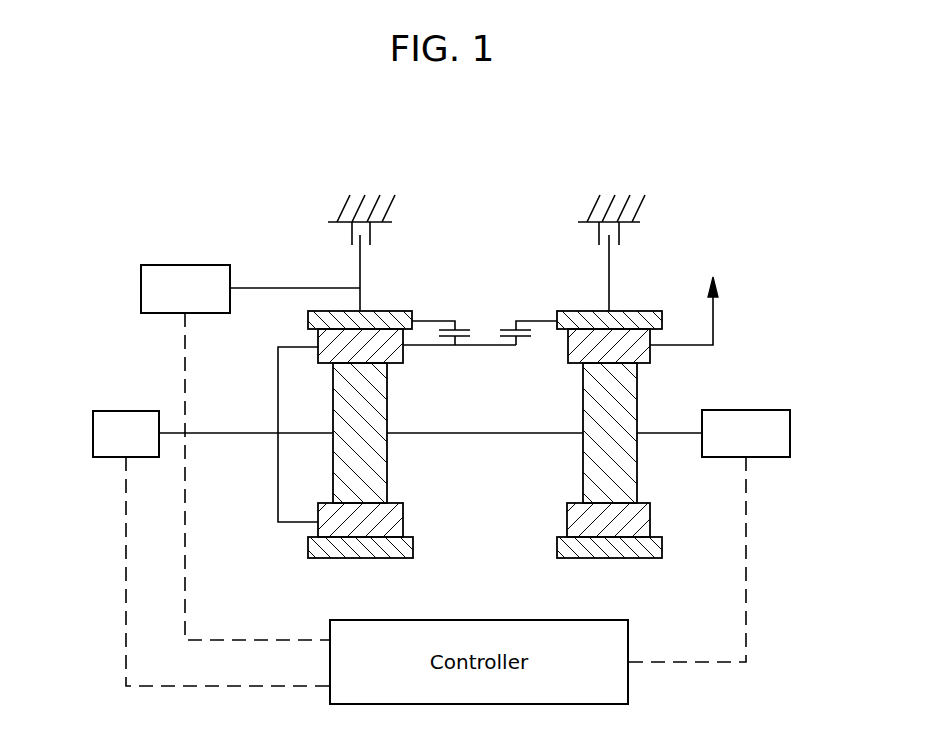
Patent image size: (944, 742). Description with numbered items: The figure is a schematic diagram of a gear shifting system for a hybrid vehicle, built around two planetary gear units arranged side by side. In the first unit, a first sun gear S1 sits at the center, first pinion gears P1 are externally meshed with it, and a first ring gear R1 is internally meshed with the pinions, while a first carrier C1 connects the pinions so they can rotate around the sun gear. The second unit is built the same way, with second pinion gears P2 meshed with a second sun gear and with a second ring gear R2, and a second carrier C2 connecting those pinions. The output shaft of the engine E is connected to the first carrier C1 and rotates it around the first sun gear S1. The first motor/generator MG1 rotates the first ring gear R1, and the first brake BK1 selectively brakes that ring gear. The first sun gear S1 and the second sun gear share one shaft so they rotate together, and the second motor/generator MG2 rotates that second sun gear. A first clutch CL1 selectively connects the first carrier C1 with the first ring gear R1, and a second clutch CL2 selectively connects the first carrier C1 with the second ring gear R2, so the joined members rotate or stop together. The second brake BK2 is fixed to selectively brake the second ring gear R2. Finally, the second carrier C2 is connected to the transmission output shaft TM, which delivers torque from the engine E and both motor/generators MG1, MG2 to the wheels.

The first brake BK1 is at (339, 253).
The second brake BK2 is at (585, 253).
The first motor/generator MG1 is at (250, 452).
The second motor/generator MG2 is at (709, 536).
The engine E is at (213, 548).
The first ring gear R1 is at (385, 311).
The second ring gear R2 is at (590, 311).
The first pinion gear P1 is at (403, 357).
The second pinion gear P2 is at (568, 355).
The first sun gear S1 is at (387, 458).
The first carrier C1 is at (293, 347).
The second carrier C2 is at (683, 347).
The first clutch CL1 is at (459, 316).
The second clutch CL2 is at (525, 316).
The transmission output shaft TM is at (714, 239).